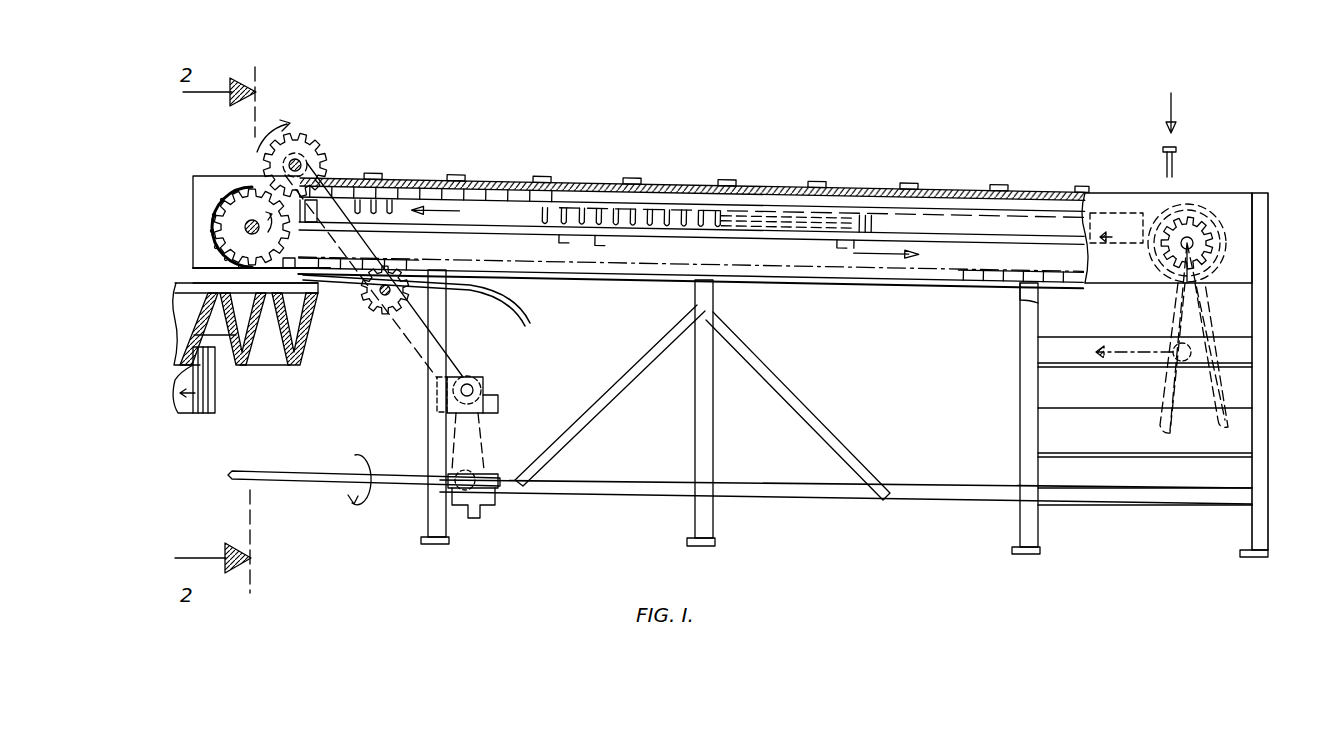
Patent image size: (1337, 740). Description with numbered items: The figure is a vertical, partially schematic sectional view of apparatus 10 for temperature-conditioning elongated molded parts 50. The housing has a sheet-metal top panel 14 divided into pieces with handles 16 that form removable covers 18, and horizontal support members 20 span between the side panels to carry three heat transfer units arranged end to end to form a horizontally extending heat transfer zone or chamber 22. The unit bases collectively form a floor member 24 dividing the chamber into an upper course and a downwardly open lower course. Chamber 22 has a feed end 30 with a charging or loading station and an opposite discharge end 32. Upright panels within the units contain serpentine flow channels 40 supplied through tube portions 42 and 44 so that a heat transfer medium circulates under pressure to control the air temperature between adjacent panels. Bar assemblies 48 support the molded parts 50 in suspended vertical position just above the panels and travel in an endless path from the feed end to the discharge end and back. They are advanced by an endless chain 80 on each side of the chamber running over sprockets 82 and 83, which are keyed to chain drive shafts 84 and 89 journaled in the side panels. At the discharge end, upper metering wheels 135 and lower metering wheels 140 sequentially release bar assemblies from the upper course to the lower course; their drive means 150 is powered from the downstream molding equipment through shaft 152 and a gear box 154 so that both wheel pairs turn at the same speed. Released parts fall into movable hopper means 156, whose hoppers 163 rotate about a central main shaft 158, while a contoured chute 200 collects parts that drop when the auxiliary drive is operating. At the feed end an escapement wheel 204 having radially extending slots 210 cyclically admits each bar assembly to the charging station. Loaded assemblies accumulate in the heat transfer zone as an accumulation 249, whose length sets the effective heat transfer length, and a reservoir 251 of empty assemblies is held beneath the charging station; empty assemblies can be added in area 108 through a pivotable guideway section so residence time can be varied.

The apparatus 10 is at (606, 567).
The top panel 14 is at (668, 185).
The handles 16 is at (818, 184).
The removable covers 18 is at (745, 185).
The horizontal support members 20 is at (603, 245).
The heat transfer zone or chamber 22 is at (472, 212).
The floor member 24 is at (547, 233).
The feed end 30 is at (1147, 183).
The discharge end 32 is at (318, 284).
The flow channels 40 is at (832, 212).
The tube portion 42 is at (850, 237).
The tube portion 44 is at (593, 228).
The bar assemblies 48 is at (390, 190).
The elongated molded parts 50 is at (1180, 163).
The endless chain 80 is at (233, 193).
The sprocket 82 is at (1227, 195).
The sprocket 83 is at (238, 210).
The chain drive shaft 84 is at (1200, 242).
The chain drive shaft 89 is at (248, 223).
The area 108 is at (833, 283).
The upper metering wheels 135 is at (305, 140).
The lower metering wheels 140 is at (345, 309).
The drive means 150 is at (392, 417).
The shaft 152 is at (272, 470).
The gear box 154 is at (484, 492).
The movable hopper means 156 is at (230, 451).
The central main shaft 158 is at (216, 398).
The hoppers 163 is at (302, 332).
The contoured chute 200 is at (478, 300).
The escapement wheel 204 is at (1172, 217).
The slots 210 is at (1185, 215).
The accumulation of loaded bar assemblies 249 is at (463, 237).
The reservoir of empty bar assemblies 251 is at (1005, 285).